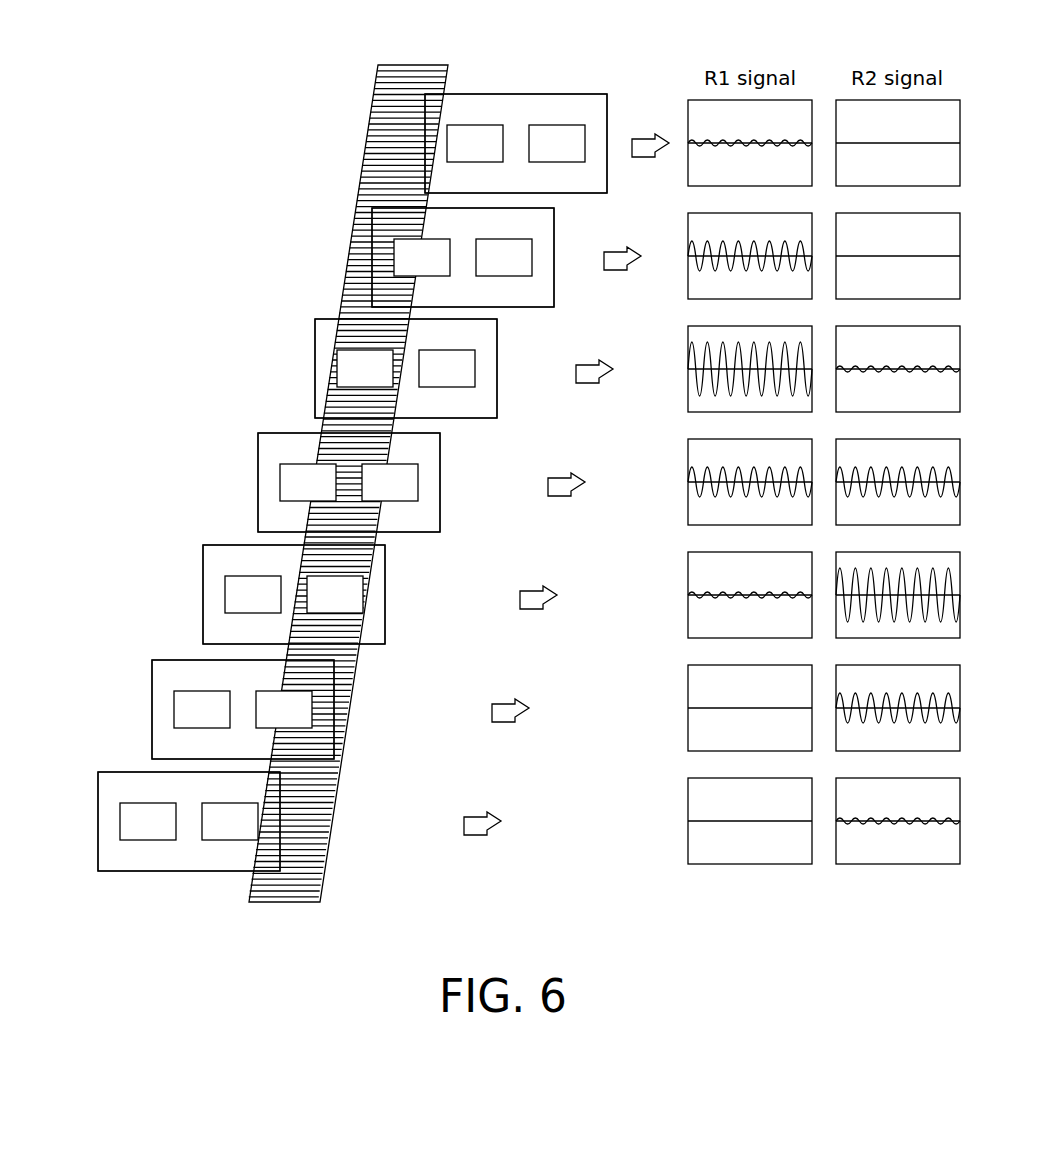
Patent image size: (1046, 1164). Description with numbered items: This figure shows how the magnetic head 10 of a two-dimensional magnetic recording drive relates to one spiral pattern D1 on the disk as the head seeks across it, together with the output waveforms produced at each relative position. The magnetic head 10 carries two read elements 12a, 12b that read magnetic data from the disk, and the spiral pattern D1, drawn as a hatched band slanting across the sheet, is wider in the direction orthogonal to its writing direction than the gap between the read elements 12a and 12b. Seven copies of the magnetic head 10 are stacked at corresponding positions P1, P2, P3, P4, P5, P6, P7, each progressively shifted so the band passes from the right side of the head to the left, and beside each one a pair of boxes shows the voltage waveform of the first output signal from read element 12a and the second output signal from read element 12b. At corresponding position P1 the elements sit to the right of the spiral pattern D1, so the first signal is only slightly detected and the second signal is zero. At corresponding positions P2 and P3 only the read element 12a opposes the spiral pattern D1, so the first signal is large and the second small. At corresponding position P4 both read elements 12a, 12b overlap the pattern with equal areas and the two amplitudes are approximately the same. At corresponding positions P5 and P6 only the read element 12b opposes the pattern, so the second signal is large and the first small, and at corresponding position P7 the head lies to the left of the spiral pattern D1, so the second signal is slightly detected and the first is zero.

The magnetic head 10 is at (607, 101).
The read element 12a is at (480, 125).
The read element 12b is at (556, 125).
The spiral pattern D1 is at (369, 122).
The corresponding position P1 is at (600, 76).
The corresponding position P2 is at (567, 234).
The corresponding position P3 is at (512, 349).
The corresponding position P4 is at (453, 462).
The corresponding position P5 is at (193, 555).
The corresponding position P6 is at (142, 670).
The corresponding position P7 is at (87, 783).